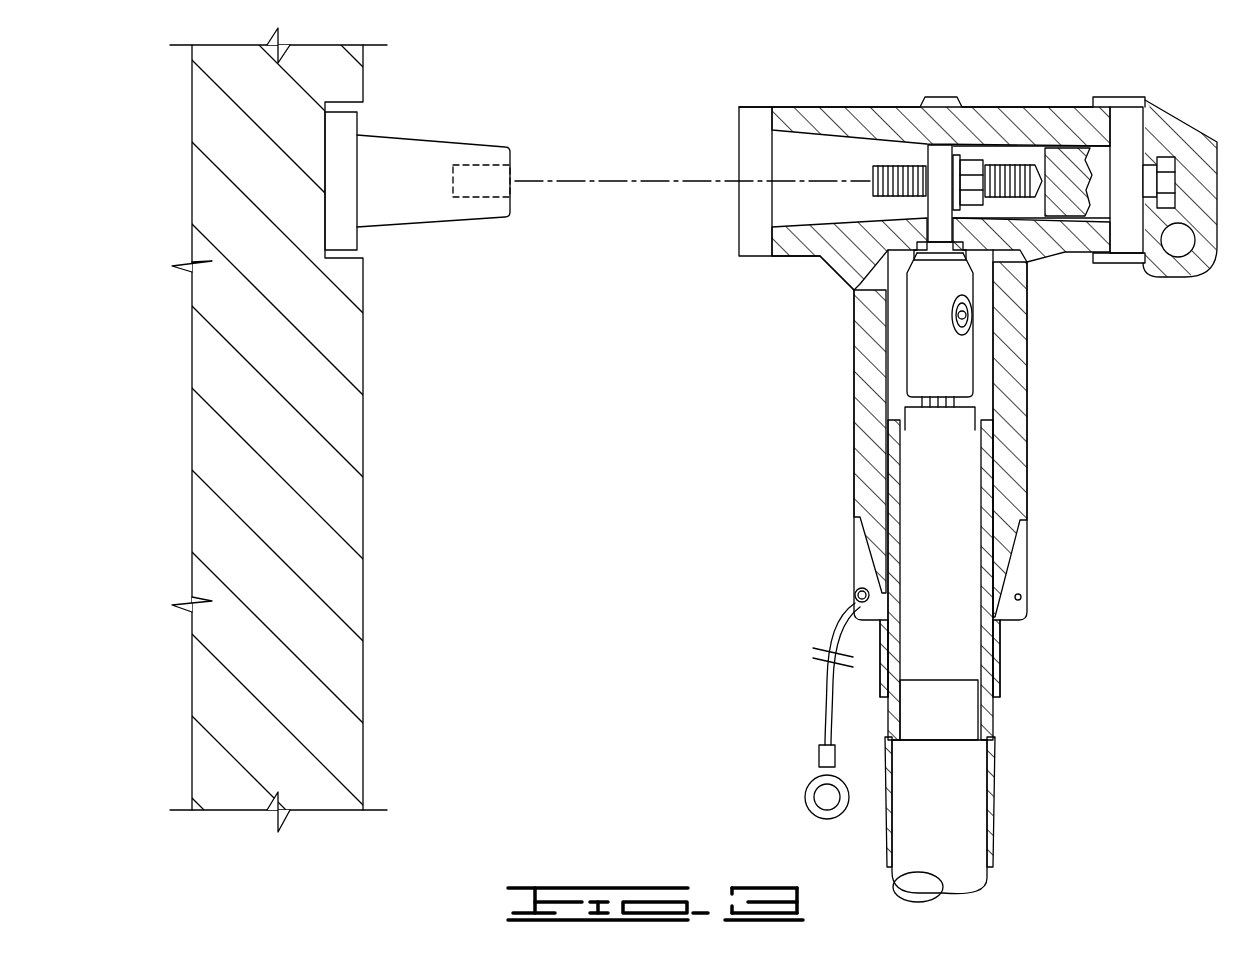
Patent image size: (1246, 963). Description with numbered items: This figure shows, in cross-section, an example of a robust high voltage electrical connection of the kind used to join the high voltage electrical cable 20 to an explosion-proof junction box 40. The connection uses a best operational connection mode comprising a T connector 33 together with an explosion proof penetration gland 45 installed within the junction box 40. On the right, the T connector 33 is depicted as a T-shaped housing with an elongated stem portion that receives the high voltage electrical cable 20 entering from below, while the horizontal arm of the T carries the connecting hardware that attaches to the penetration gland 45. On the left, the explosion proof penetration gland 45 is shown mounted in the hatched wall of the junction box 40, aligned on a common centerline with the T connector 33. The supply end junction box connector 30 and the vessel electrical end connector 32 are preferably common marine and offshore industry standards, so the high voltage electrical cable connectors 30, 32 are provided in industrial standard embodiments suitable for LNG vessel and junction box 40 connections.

The high voltage electrical cable 20 is at (968, 835).
The supply end junction box connector 30 is at (952, 410).
The vessel electrical end connector 32 is at (952, 410).
The T connector 33 is at (1027, 395).
The junction box 40 is at (365, 522).
The explosion proof penetration gland 45 is at (420, 135).